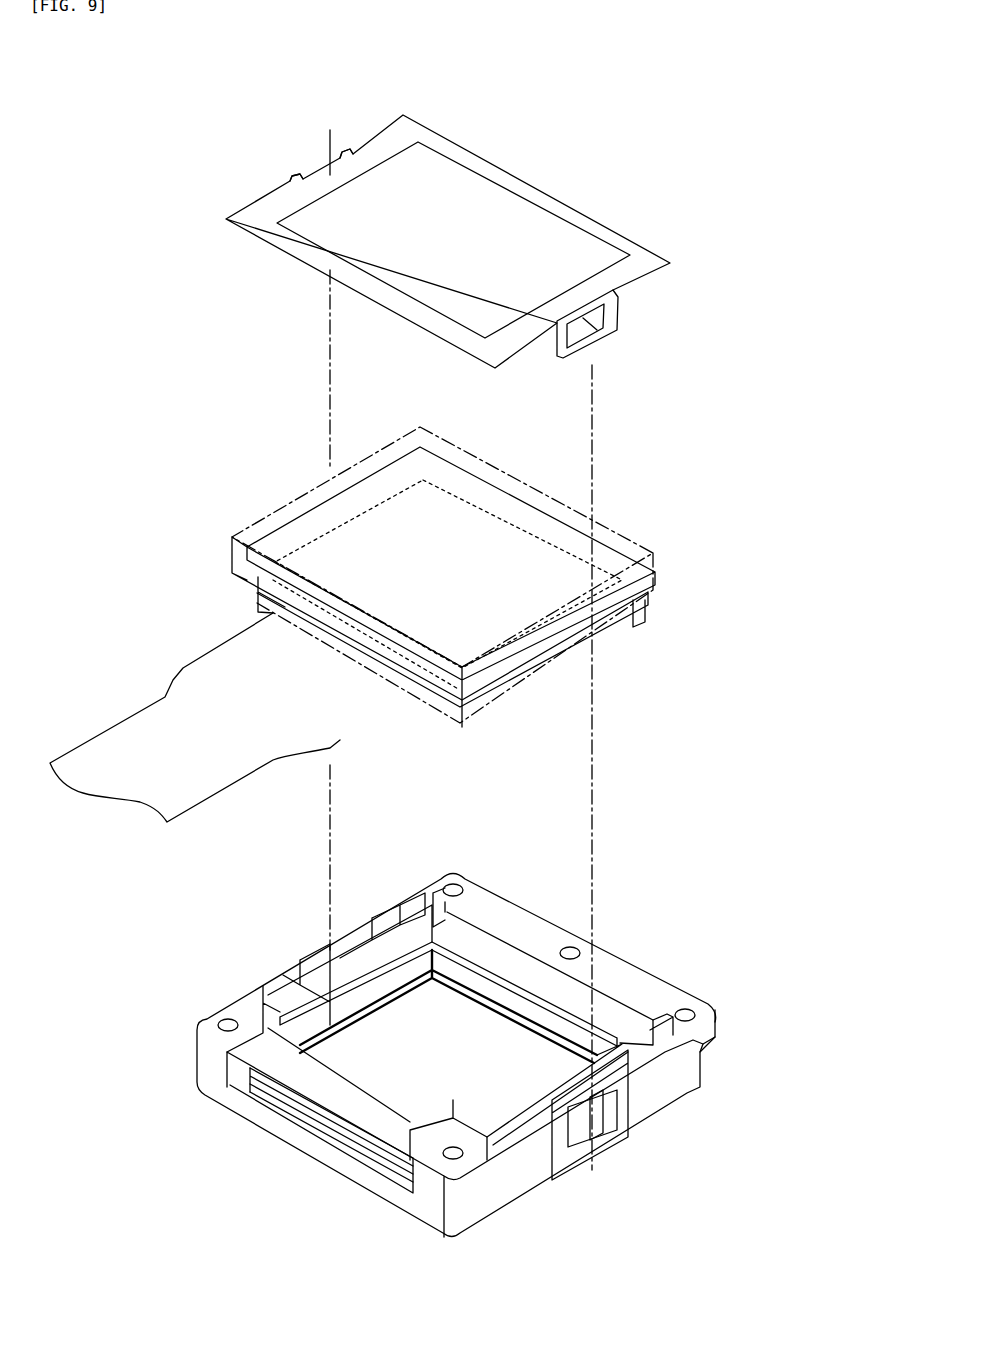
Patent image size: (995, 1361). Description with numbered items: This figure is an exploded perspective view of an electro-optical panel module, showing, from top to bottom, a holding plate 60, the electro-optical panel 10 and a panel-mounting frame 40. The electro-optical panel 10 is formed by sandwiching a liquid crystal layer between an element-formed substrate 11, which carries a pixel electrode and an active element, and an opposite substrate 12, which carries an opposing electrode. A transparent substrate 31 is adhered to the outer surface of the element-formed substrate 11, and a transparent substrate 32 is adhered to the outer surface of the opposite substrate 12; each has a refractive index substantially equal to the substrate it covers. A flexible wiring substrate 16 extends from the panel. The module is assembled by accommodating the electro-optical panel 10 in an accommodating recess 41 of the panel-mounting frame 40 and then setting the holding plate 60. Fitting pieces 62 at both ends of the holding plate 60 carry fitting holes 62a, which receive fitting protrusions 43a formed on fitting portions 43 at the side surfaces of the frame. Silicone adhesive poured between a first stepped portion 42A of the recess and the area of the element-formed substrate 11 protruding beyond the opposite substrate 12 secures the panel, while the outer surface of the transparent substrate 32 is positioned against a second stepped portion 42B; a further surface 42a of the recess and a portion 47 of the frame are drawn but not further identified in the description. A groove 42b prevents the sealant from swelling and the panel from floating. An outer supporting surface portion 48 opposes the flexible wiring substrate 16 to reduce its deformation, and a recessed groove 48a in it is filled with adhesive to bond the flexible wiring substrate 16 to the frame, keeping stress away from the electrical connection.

The electro-optical panel 10 is at (503, 530).
The element-formed substrate 11 is at (272, 527).
The opposite substrate 12 is at (470, 497).
The flexible wiring substrate 16 is at (123, 722).
The transparent substrate 31 is at (315, 487).
The transparent substrate 32 is at (558, 672).
The panel-mounting frame 40 is at (443, 1038).
The accommodating recess 41 is at (478, 943).
The first stepped portion 42A is at (372, 965).
The second stepped portion 42B is at (330, 1020).
The ledge surface 42a is at (527, 983).
The groove 42b is at (378, 1093).
The fitting portion 43 is at (630, 1107).
The fitting protrusion 43a is at (613, 1137).
The cable support block 47 is at (377, 1117).
The outer supporting surface portion 48 is at (262, 1097).
The recessed groove 48a is at (318, 1122).
The holding plate 60 is at (565, 177).
The fitting piece 62 is at (293, 177).
The fitting hole 62a is at (587, 322).